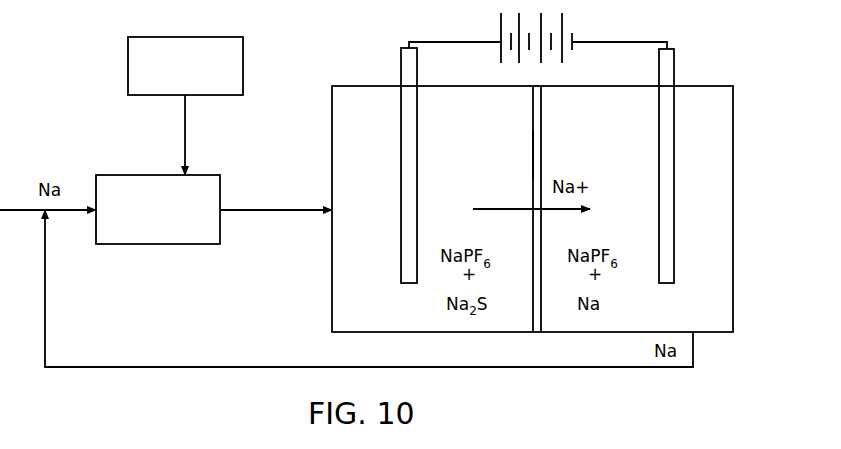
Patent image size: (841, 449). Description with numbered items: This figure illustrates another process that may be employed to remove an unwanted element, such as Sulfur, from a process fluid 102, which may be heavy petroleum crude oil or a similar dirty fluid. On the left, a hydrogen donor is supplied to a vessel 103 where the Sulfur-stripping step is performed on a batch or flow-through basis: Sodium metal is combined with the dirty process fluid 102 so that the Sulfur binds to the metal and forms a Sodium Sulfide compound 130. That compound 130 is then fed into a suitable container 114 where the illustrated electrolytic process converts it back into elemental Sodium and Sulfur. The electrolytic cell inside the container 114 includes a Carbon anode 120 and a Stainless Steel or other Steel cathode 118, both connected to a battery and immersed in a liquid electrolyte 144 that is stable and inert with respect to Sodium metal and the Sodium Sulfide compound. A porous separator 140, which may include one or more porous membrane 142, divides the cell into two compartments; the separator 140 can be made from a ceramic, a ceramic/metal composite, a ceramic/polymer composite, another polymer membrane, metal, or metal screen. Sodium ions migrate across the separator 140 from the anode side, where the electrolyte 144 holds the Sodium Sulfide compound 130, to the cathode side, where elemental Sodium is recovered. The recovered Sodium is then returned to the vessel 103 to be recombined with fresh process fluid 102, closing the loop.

The process fluid 102 is at (158, 209).
The vessel 103 is at (145, 175).
The container 114 is at (733, 156).
The cathode 118 is at (659, 118).
The anode 120 is at (417, 118).
The Sodium Sulfide compound 130 is at (237, 210).
The porous separator 140 is at (541, 118).
The porous membrane 142 is at (532, 155).
The liquid electrolyte 144 is at (357, 118).